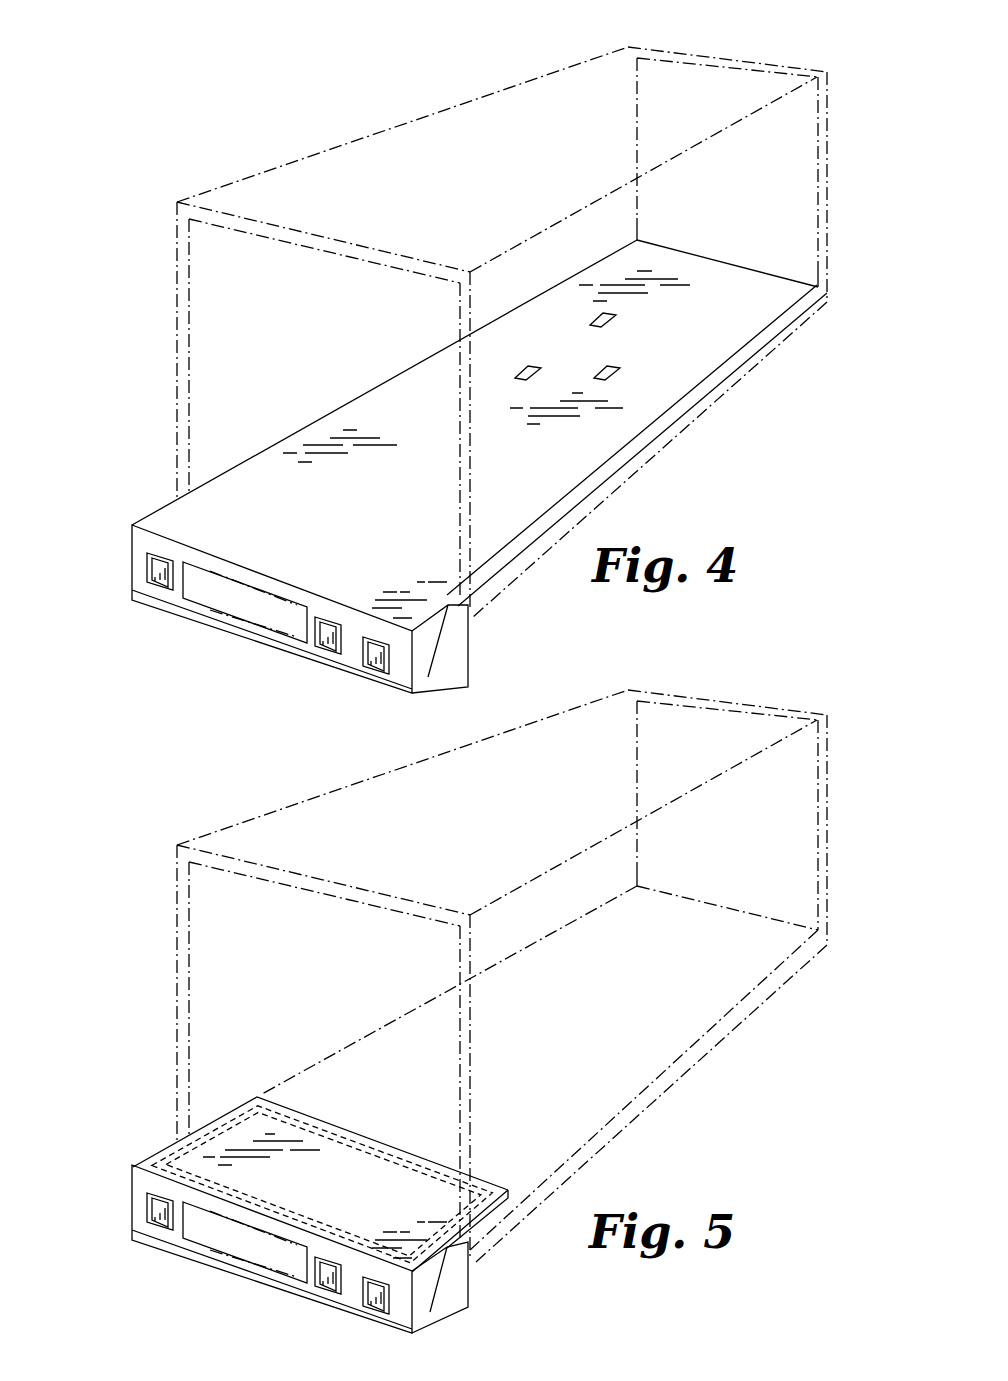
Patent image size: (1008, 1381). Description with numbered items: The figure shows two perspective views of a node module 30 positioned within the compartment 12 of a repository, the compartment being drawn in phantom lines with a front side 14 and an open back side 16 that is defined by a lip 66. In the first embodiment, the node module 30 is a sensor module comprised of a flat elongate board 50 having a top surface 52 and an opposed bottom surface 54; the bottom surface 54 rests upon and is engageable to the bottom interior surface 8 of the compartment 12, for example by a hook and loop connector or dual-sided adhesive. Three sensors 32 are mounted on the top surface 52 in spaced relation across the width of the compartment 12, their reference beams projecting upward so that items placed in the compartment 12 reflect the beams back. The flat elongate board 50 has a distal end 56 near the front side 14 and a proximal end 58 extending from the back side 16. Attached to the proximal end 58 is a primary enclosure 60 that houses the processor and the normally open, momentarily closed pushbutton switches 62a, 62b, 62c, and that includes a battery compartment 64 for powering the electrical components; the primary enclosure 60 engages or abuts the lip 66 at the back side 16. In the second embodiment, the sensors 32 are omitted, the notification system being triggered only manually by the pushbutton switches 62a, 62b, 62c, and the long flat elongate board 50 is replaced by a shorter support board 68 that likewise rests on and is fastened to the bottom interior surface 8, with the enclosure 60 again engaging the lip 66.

In FIG. 4, the bottom interior surface 8 is at (507, 557).
In FIG. 5, the bottom interior surface 8 is at (615, 1041).
In FIG. 4, the compartment 12 is at (272, 187).
In FIG. 5, the compartment 12 is at (702, 718).
In FIG. 4, the front side 14 is at (664, 50).
In FIG. 4, the back side 16 is at (290, 373).
In FIG. 5, the back side 16 is at (143, 856).
In FIG. 4, the node module 30 is at (436, 487).
In FIG. 5, the node module 30 is at (292, 1234).
In FIG. 4, the sensors 32 is at (612, 380).
In FIG. 4, the flat elongate board 50 is at (303, 428).
In FIG. 4, the top surface 52 is at (707, 339).
In FIG. 4, the bottom surface 54 is at (712, 380).
In FIG. 4, the distal end 56 is at (790, 227).
In FIG. 4, the proximal end 58 is at (228, 615).
In FIG. 5, the proximal end 58 is at (232, 1268).
In FIG. 4, the primary enclosure 60 is at (453, 647).
In FIG. 5, the primary enclosure 60 is at (452, 1285).
In FIG. 4, the pushbutton switch 62a is at (148, 567).
In FIG. 5, the pushbutton switch 62a is at (113, 1211).
In FIG. 4, the pushbutton switch 62b is at (323, 645).
In FIG. 5, the pushbutton switch 62b is at (308, 1309).
In FIG. 4, the pushbutton switch 62c is at (377, 668).
In FIG. 5, the pushbutton switch 62c is at (372, 1324).
In FIG. 4, the battery compartment 64 is at (217, 607).
In FIG. 5, the battery compartment 64 is at (237, 1261).
In FIG. 4, the lip 66 is at (180, 318).
In FIG. 5, the support board 68 is at (498, 1187).